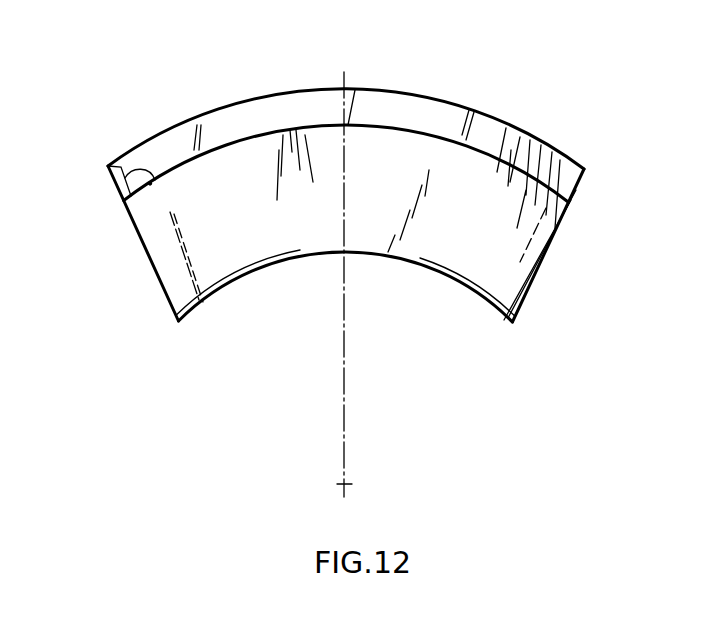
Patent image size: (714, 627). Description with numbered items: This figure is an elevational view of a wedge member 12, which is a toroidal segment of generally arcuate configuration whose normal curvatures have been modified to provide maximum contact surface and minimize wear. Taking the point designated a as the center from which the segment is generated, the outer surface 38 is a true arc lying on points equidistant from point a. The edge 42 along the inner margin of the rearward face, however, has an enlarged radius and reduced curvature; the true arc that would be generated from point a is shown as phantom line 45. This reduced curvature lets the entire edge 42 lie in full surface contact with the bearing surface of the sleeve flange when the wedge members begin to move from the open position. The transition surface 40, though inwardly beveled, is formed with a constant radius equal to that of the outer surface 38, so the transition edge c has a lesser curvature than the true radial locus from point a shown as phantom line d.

The wedge member 12 is at (342, 196).
The outer surface 38 is at (468, 104).
The transition surface 40 is at (584, 174).
The edge 42 is at (483, 262).
The phantom line 45 is at (196, 311).
The center point a is at (359, 284).
The transition edge c is at (120, 194).
The phantom line d is at (133, 191).